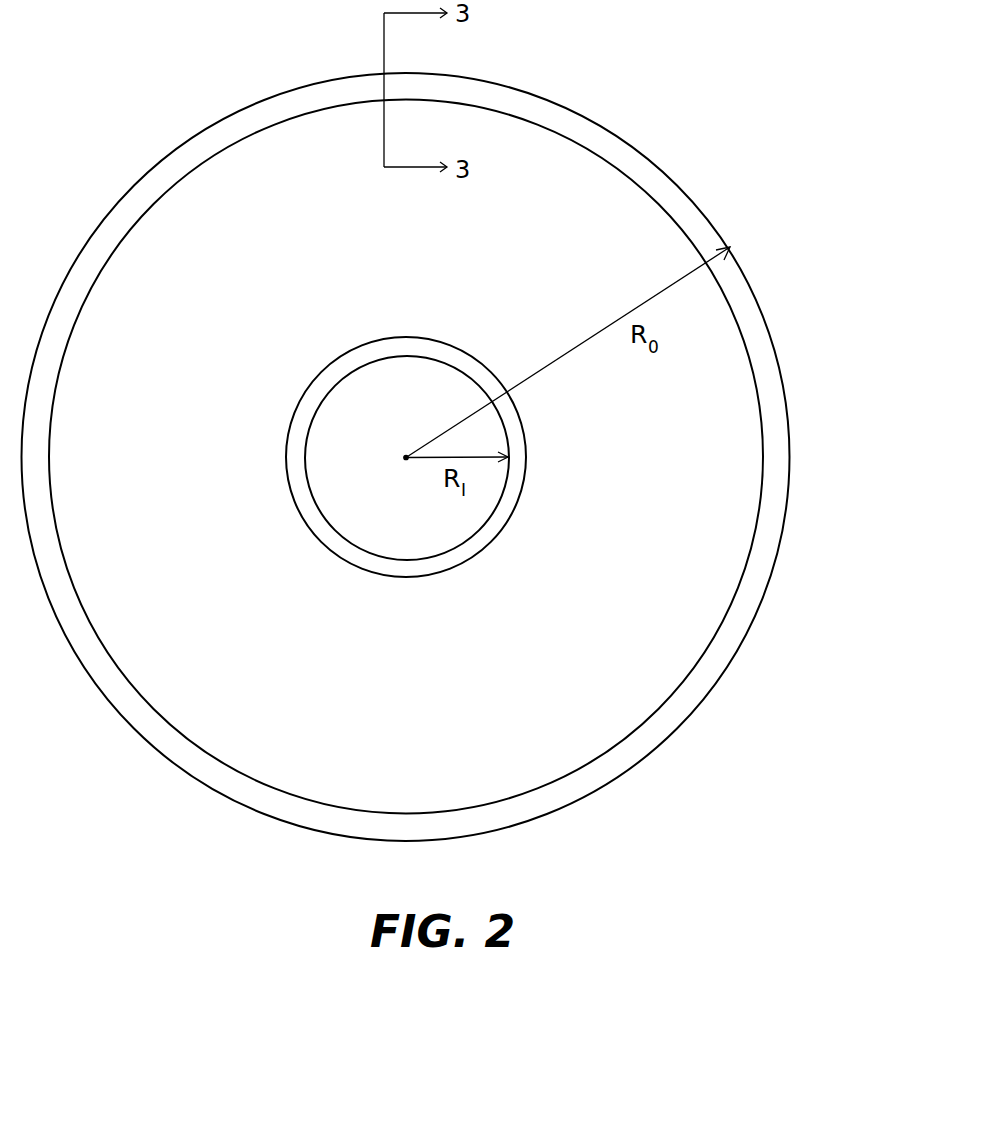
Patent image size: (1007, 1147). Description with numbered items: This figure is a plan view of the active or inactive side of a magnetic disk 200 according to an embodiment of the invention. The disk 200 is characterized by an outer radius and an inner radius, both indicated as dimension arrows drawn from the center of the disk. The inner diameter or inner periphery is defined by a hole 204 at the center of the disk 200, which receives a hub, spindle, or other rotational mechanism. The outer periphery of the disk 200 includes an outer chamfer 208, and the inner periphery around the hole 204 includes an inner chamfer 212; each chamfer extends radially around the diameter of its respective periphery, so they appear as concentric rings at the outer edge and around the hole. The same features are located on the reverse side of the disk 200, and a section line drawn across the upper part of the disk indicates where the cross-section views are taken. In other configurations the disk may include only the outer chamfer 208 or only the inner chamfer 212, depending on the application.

The disk 200 is at (465, 444).
The hole 204 is at (381, 454).
The outer chamfer 208 is at (752, 320).
The inner chamfer 212 is at (505, 495).